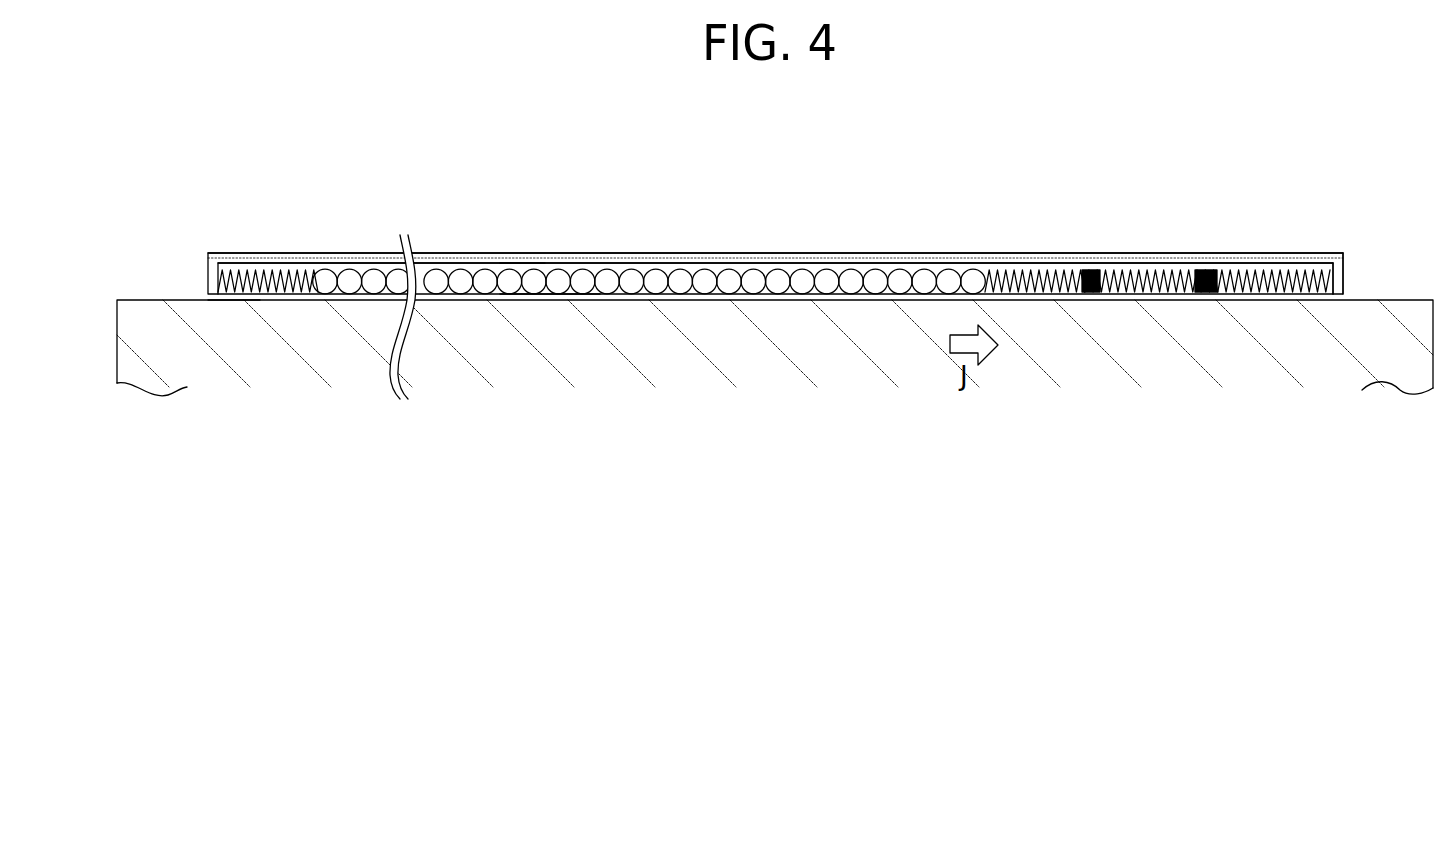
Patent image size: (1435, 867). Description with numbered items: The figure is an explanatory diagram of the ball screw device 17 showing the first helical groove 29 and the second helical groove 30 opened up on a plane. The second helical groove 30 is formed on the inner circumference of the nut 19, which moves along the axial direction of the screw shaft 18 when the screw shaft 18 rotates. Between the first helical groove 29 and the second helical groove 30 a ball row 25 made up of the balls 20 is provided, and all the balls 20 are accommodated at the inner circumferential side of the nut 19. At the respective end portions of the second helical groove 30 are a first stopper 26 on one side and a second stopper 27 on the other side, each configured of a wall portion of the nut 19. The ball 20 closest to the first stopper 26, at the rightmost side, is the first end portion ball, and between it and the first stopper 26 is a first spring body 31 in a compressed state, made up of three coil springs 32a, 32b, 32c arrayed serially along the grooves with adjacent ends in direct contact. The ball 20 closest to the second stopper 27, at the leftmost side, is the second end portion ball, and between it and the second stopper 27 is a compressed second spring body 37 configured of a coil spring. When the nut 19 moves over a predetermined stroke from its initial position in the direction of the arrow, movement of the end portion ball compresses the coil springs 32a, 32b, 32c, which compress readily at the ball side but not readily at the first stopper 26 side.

The ball screw device 17 is at (1208, 238).
The screw shaft 18 is at (321, 327).
The nut 19 is at (712, 254).
The balls 20 is at (975, 280).
The ball row 25 is at (523, 256).
The first stopper 26 is at (1318, 290).
The second stopper 27 is at (233, 300).
The first helical groove 29 is at (548, 283).
The second helical groove 30 is at (633, 272).
The first spring body 31 is at (1157, 301).
The coil spring 32a is at (1030, 292).
The coil spring 32b is at (1150, 292).
The coil spring 32c is at (1255, 290).
The second spring body 37 is at (277, 256).